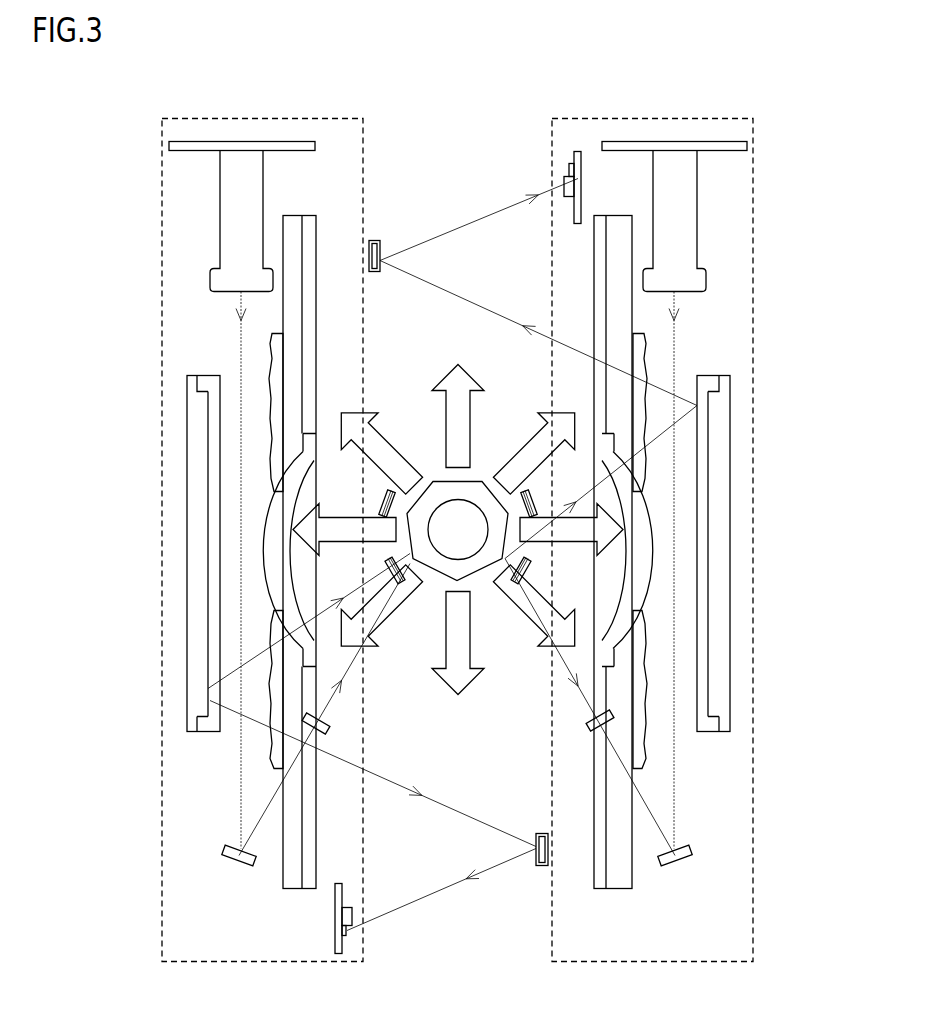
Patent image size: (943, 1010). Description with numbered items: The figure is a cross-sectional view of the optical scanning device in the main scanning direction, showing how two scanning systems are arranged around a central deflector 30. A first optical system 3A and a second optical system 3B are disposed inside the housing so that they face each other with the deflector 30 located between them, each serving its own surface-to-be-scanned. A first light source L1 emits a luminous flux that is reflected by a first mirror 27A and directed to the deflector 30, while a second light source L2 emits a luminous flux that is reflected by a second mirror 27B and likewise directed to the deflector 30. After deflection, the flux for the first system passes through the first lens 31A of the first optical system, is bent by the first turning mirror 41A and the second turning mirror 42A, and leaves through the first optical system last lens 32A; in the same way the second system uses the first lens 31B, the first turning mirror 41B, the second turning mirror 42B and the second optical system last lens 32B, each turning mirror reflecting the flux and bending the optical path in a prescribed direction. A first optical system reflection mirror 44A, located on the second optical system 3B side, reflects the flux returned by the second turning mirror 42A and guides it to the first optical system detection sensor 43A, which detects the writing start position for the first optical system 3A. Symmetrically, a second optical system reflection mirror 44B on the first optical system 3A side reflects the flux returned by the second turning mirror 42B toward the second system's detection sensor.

The first optical system 3A is at (717, 120).
The second optical system 3B is at (337, 120).
The first light source L1 is at (697, 218).
The second light source L2 is at (220, 220).
The first optical system detection sensor 43A is at (582, 168).
The first optical system reflection mirror 44A is at (374, 240).
The second optical system reflection mirror 44B is at (545, 868).
The deflector 30 is at (473, 472).
The first turning mirror of the first optical system 41A is at (705, 493).
The first turning mirror of the second optical system 41B is at (197, 493).
The second turning mirror of the first optical system 42A is at (711, 385).
The second turning mirror of the second optical system 42B is at (205, 385).
The first lens of the first optical system 31A is at (645, 548).
The first lens of the second optical system 31B is at (277, 572).
The first optical system last lens 32A is at (637, 737).
The second optical system last lens 32B is at (279, 745).
The first mirror 27A is at (690, 862).
The second mirror 27B is at (226, 856).